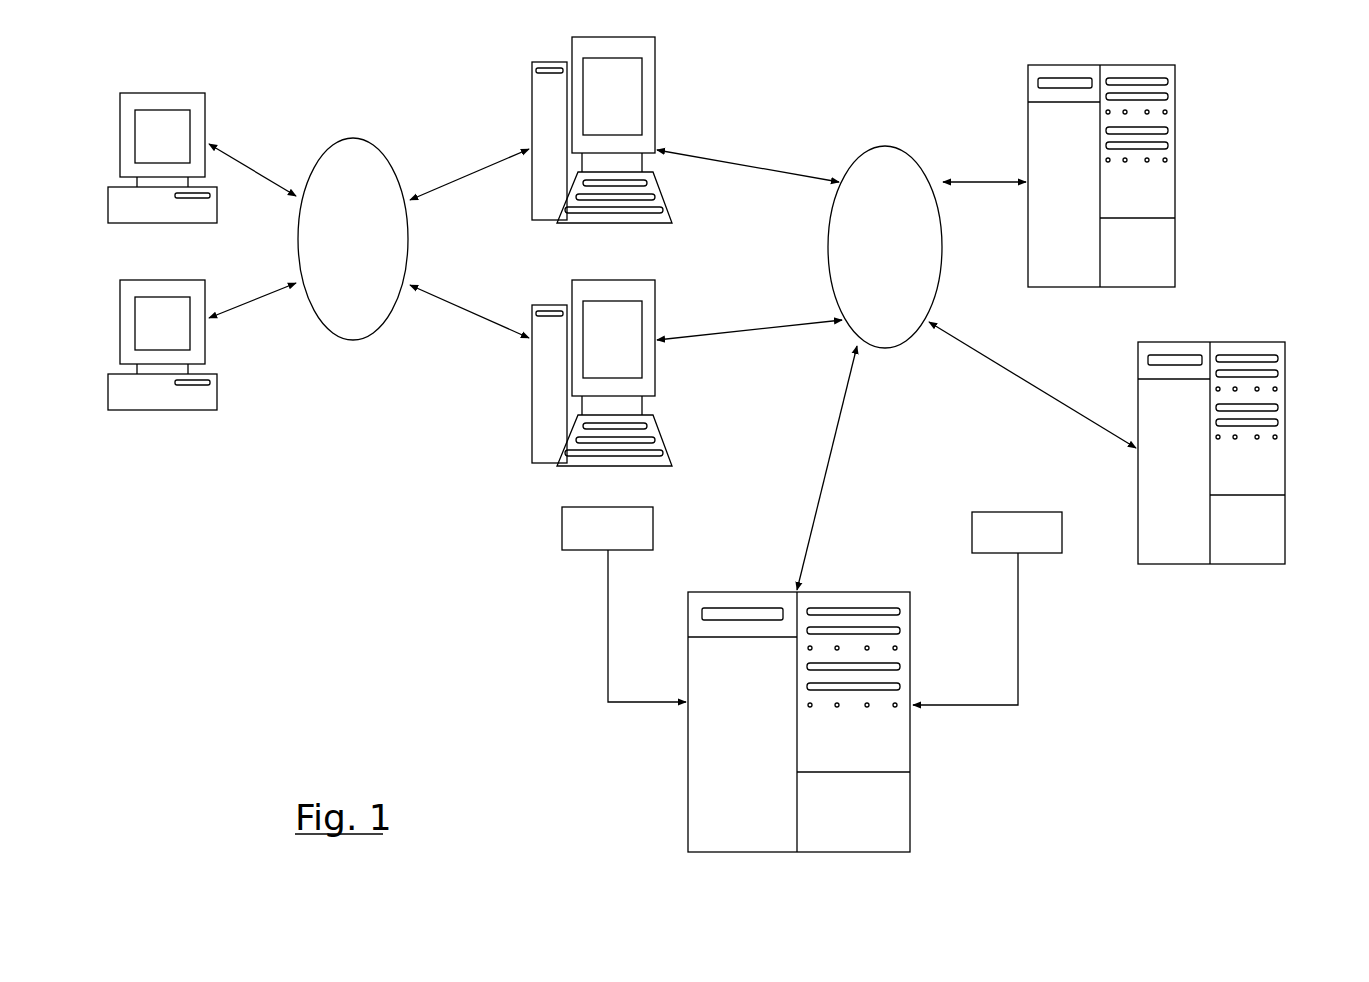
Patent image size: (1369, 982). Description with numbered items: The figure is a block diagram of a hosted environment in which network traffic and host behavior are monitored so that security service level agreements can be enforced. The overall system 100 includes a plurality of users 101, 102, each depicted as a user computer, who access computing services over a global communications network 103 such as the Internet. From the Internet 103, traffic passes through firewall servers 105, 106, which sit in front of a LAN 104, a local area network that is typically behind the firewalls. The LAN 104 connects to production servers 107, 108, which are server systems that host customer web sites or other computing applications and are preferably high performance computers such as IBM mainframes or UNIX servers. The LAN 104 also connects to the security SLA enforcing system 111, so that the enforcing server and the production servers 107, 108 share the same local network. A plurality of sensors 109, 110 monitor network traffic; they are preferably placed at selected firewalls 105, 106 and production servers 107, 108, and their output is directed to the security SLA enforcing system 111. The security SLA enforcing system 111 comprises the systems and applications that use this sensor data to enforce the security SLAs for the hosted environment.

The system 100 is at (343, 680).
The user 101 is at (108, 200).
The user 102 is at (108, 387).
The global communications network 103 is at (320, 320).
The LAN 104 is at (895, 147).
The firewall server 105 is at (655, 112).
The firewall server 106 is at (655, 315).
The production server 107 is at (1175, 205).
The production server 108 is at (1283, 513).
The sensor 109 is at (993, 555).
The sensor 110 is at (580, 550).
The security SLA enforcing system 111 is at (688, 785).